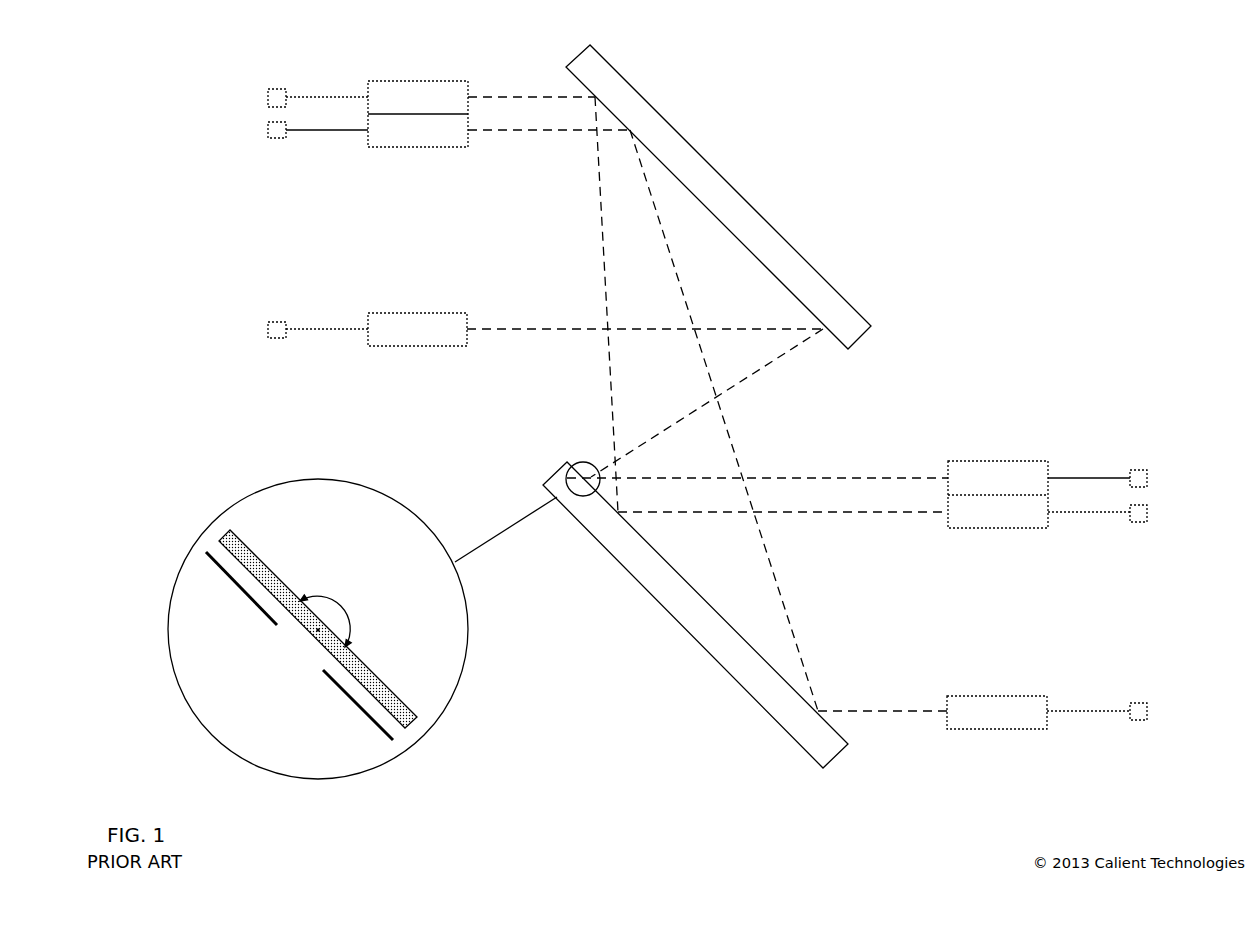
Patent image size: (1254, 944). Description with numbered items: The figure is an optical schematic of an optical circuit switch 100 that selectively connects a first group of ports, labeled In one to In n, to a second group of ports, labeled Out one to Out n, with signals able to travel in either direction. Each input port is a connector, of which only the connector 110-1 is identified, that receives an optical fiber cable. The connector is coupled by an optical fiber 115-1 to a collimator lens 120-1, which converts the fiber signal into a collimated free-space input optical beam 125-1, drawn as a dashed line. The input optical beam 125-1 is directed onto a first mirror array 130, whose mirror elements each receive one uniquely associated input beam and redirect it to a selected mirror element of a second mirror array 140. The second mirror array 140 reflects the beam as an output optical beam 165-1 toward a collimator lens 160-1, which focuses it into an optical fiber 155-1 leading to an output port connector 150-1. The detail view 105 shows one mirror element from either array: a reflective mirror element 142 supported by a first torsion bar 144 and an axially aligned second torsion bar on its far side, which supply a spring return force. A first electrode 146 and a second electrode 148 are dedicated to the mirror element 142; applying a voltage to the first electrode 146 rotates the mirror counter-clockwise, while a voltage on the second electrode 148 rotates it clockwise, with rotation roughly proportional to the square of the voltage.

The optical circuit switch 100 is at (695, 418).
The detail view 105 is at (362, 646).
The connector 110-1 is at (277, 89).
The optical fiber 115-1 is at (327, 97).
The collimator lens 120-1 is at (415, 81).
The input optical beam 125-1 is at (533, 97).
The first mirror array 130 is at (667, 122).
The second mirror array 140 is at (683, 625).
The mirror element 142 is at (268, 567).
The first torsion bar 144 is at (323, 627).
The first electrode 146 is at (239, 597).
The second electrode 148 is at (360, 708).
The connector 150-1 is at (1132, 470).
The optical fiber 155-1 is at (1072, 478).
The collimator lens 160-1 is at (997, 461).
The output optical beam 165-1 is at (839, 478).